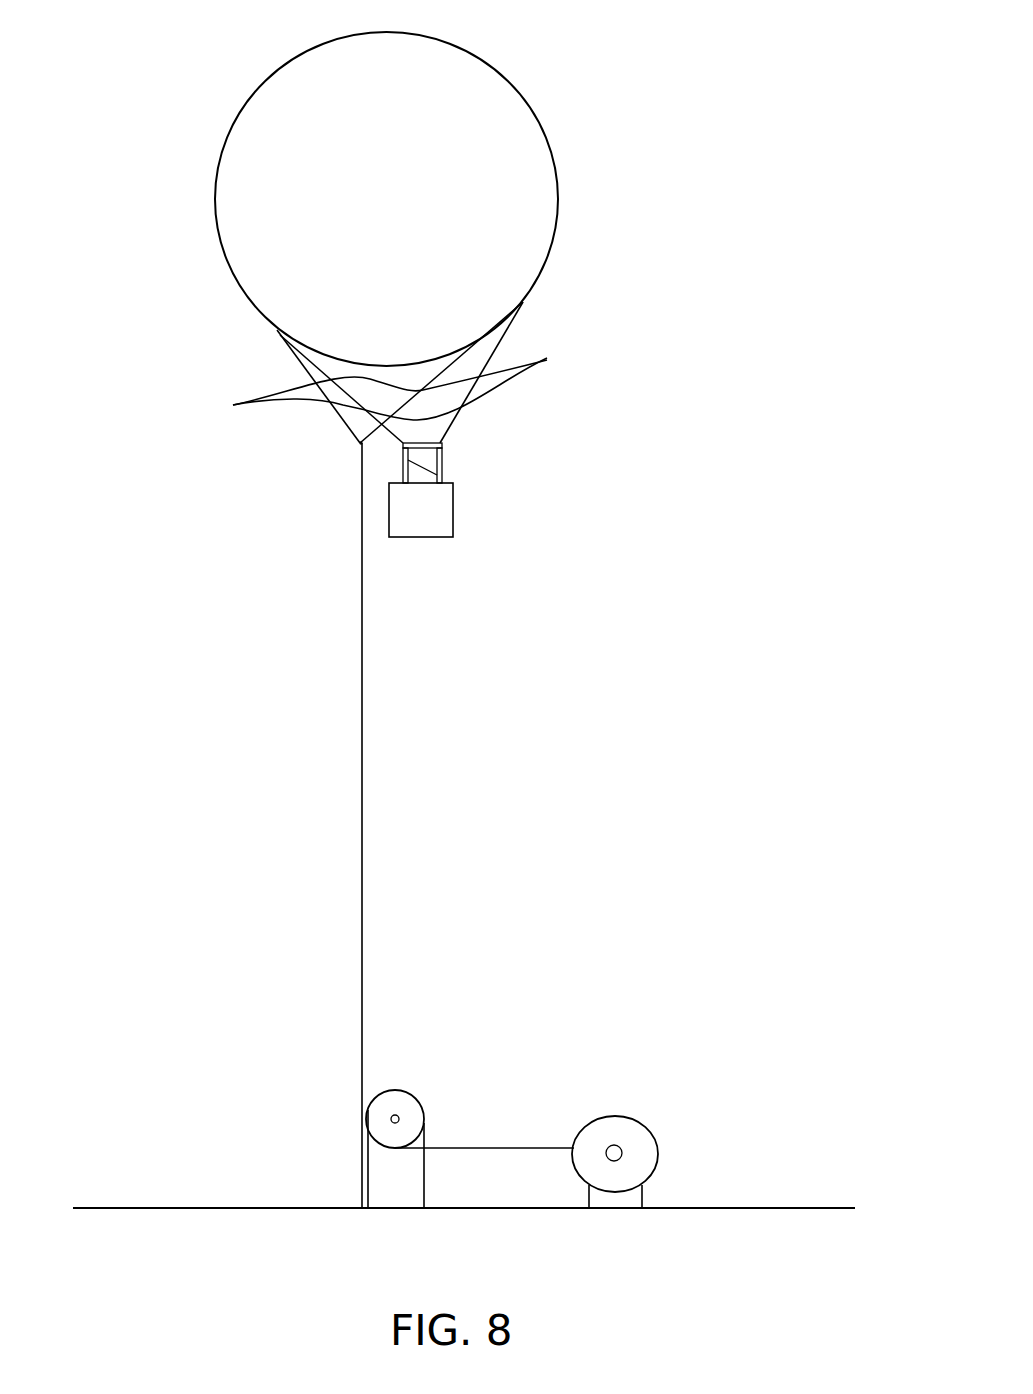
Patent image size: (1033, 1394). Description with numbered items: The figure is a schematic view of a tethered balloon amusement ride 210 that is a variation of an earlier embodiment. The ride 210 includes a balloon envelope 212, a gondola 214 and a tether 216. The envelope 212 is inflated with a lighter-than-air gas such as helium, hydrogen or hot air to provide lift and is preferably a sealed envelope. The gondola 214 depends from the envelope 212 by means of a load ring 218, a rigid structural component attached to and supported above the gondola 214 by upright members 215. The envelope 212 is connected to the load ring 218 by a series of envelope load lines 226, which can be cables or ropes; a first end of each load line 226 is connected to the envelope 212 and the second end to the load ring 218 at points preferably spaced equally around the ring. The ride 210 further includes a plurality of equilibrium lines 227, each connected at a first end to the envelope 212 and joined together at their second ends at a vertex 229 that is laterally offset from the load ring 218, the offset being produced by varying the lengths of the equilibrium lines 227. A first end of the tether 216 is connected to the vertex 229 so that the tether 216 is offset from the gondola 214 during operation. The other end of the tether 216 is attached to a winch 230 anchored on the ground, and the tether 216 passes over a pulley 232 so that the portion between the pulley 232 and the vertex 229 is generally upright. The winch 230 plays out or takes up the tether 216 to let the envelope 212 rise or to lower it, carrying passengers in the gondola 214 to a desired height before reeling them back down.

The tethered balloon amusement ride 210 is at (705, 268).
The balloon envelope 212 is at (510, 80).
The gondola 214 is at (455, 525).
The upright members 215 is at (443, 478).
The tether 216 is at (361, 888).
The load ring 218 is at (440, 446).
The envelope load lines 226 is at (411, 382).
The equilibrium lines 227 is at (365, 391).
The vertex 229 is at (306, 480).
The winch 230 is at (613, 1116).
The pulley 232 is at (393, 1090).